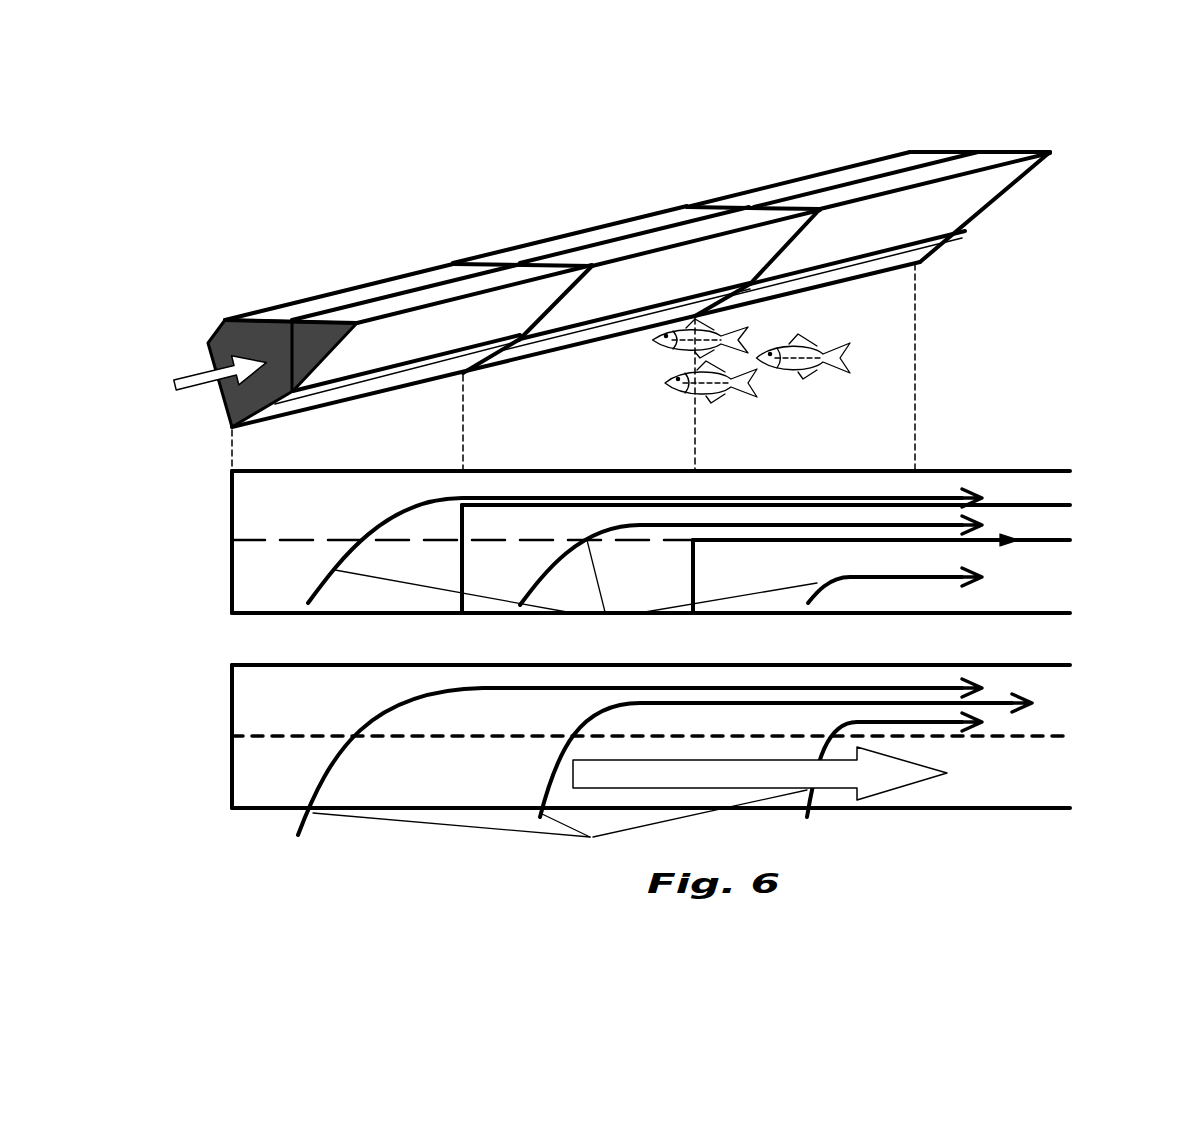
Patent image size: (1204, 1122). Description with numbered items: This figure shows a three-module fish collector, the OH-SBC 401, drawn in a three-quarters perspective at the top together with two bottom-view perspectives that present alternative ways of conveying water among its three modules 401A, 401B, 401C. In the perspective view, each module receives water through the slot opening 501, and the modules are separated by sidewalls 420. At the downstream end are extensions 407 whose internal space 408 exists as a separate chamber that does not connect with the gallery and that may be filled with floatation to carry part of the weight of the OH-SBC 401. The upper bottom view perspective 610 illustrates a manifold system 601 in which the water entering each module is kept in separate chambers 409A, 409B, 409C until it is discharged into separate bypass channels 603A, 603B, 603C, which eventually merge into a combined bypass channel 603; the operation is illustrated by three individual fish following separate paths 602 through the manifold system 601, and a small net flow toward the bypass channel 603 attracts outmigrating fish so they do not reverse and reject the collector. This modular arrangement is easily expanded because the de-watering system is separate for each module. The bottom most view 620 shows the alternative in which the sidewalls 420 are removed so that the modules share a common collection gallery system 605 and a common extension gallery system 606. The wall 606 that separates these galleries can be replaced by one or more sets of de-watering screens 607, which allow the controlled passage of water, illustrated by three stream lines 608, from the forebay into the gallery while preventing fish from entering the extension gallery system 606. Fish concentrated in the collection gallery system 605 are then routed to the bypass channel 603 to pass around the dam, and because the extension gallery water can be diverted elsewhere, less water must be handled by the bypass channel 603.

The OH-SBC 401 is at (278, 226).
The module 401A is at (425, 273).
The module 401B is at (610, 223).
The module 401C is at (857, 163).
The sidewalls 420 is at (207, 343).
The extensions 407 is at (1001, 151).
The internal space 408 is at (933, 221).
The slot opening 501 is at (858, 280).
The manifold system 601 is at (658, 469).
The wall / extension gallery system 606 is at (288, 323).
The upper bottom view perspective 610 is at (205, 523).
The bottom most figure 620 is at (212, 732).
The chamber 409A is at (327, 524).
The chamber 409B is at (540, 544).
The chamber 409C is at (780, 582).
The paths 602 is at (576, 596).
The combined bypass channel 603 is at (1185, 667).
The bypass channel 603A is at (984, 498).
The bypass channel 603B is at (984, 527).
The bypass channel 603C is at (984, 577).
The collection gallery system 605 is at (285, 785).
The de-watering screens 607 is at (1070, 737).
The stream lines 608 is at (662, 786).